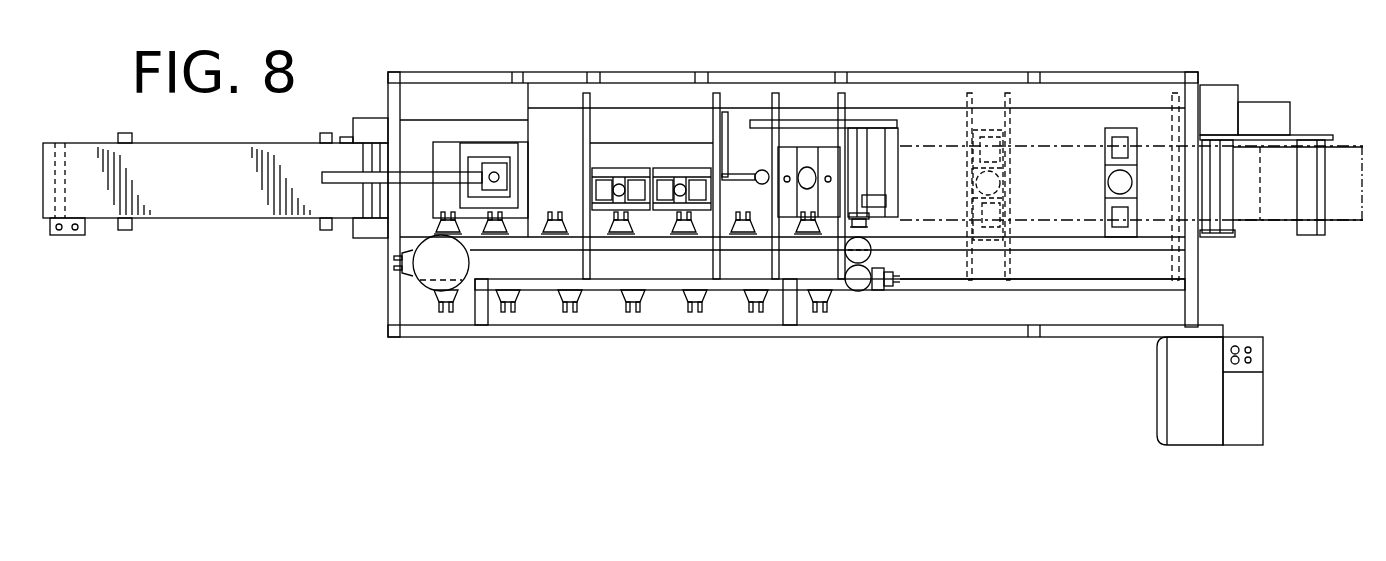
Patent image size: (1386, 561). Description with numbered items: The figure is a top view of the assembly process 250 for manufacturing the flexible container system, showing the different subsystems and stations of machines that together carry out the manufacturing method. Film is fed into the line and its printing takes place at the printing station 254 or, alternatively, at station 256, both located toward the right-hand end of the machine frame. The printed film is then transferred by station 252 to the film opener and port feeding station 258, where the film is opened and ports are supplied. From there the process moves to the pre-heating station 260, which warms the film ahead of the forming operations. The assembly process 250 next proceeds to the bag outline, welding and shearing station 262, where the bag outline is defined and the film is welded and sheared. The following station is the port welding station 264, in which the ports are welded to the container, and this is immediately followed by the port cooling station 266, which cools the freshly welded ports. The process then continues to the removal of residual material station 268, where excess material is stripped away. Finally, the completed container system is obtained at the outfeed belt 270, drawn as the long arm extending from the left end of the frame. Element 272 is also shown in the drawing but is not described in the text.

The web processing apparatus 250 is at (272, 326).
The bracket 252 is at (900, 135).
The roller assembly 254 is at (1120, 128).
The roller assembly 256 is at (985, 107).
The valve assembly 258 is at (872, 221).
The support bar 260 is at (937, 270).
The supply pipe 262 is at (810, 185).
The sensor unit 264 is at (687, 220).
The sensor unit 266 is at (623, 217).
The drive unit 268 is at (553, 178).
The arm 270 is at (190, 200).
The clamp 272 is at (876, 203).